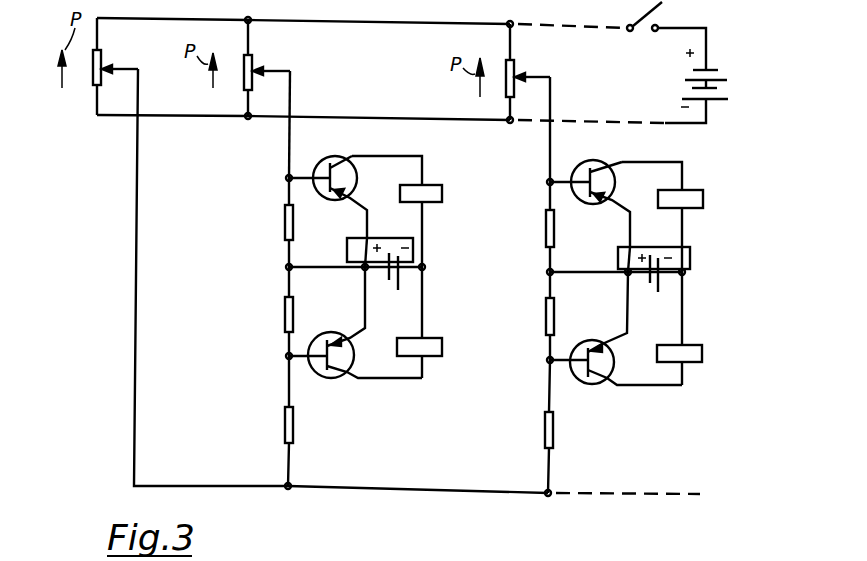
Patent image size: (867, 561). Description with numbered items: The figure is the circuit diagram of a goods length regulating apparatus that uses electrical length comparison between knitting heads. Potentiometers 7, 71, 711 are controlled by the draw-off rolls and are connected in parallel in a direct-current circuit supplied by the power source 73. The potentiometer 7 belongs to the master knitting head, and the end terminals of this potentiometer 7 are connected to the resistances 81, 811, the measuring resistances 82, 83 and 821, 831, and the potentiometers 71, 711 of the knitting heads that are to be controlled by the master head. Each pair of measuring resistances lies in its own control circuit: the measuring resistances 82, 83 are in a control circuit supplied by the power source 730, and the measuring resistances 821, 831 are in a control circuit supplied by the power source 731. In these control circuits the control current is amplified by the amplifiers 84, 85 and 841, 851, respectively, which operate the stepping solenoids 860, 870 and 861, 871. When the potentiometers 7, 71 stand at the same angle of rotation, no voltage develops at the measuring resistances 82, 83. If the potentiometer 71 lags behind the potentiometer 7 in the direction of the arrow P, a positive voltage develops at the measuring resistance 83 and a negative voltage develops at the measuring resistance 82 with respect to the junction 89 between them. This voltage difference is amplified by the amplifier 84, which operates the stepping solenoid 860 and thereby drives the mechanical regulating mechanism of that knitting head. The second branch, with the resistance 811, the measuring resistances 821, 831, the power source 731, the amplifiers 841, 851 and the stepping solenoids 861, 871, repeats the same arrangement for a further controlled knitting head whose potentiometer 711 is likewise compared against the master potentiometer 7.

The potentiometer 7 is at (101, 60).
The potentiometer 71 is at (253, 68).
The potentiometer 711 is at (515, 67).
The power source 73 is at (710, 68).
The amplifier 84 is at (337, 164).
The amplifier 85 is at (336, 373).
The amplifier 841 is at (601, 171).
The amplifier 851 is at (590, 384).
The stepping solenoid 860 is at (436, 193).
The stepping solenoid 870 is at (433, 352).
The stepping solenoid 861 is at (701, 198).
The stepping solenoid 871 is at (700, 357).
The power source 730 is at (412, 258).
The power source 731 is at (692, 265).
The measuring resistance 82 is at (287, 218).
The measuring resistance 83 is at (287, 312).
The resistance 81 is at (291, 430).
The measuring resistance 821 is at (548, 232).
The measuring resistance 831 is at (548, 318).
The resistance 811 is at (551, 433).
The junction 89 is at (287, 268).